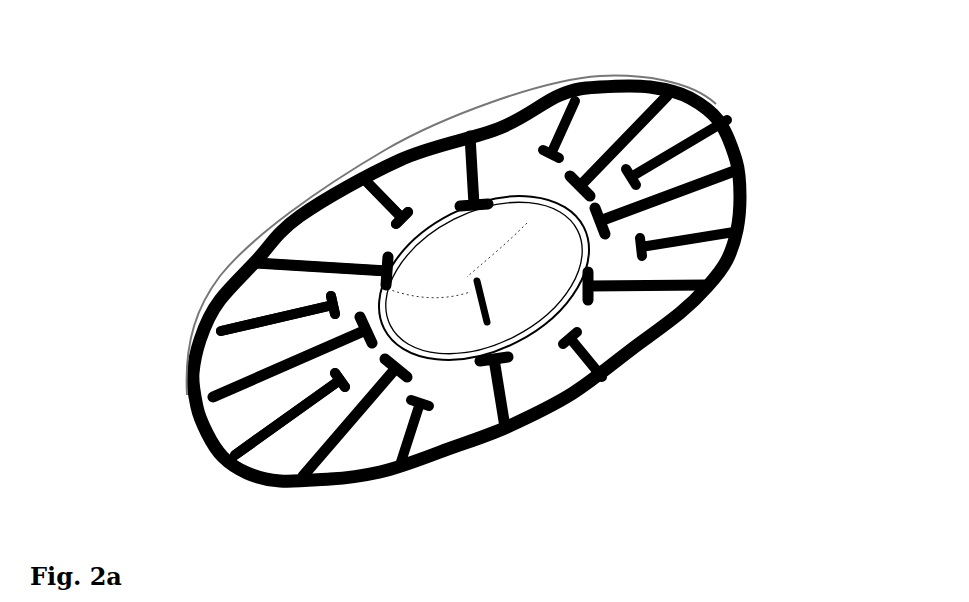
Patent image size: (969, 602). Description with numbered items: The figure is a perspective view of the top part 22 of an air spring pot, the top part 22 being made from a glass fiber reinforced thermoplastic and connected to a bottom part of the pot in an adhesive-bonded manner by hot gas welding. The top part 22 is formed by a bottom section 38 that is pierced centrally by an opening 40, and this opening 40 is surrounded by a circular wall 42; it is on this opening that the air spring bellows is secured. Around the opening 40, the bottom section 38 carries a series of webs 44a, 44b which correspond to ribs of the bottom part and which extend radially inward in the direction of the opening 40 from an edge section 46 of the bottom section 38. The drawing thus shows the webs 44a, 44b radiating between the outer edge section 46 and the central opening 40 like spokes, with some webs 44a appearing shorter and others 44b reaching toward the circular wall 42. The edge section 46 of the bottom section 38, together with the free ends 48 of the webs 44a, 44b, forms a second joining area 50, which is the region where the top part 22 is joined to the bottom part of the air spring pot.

The top part 22 is at (727, 80).
The bottom section 38 is at (420, 142).
The opening 40 is at (527, 232).
The circular wall 42 is at (540, 280).
The web 44a is at (596, 352).
The web 44b is at (655, 288).
The edge section 46 is at (247, 486).
The free ends 48 is at (255, 330).
The second joining area 50 is at (377, 180).